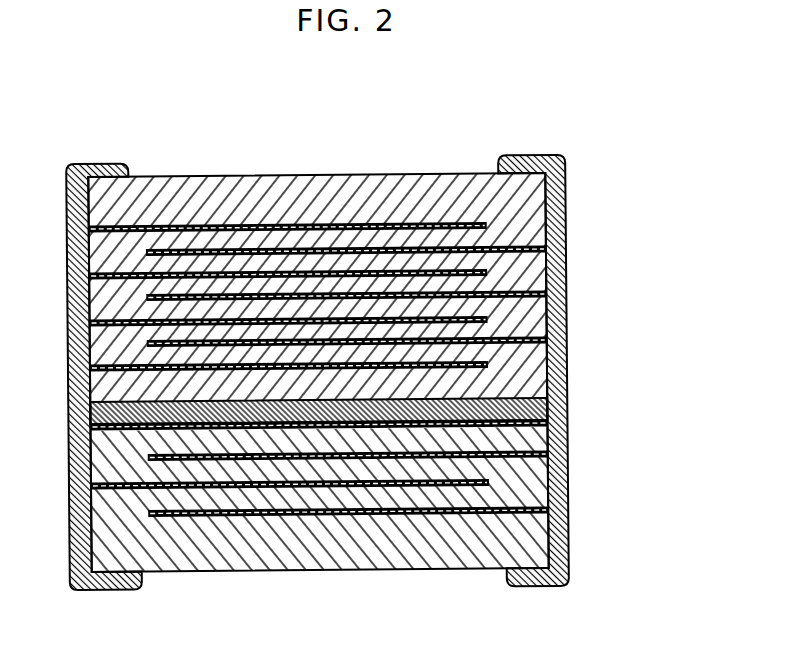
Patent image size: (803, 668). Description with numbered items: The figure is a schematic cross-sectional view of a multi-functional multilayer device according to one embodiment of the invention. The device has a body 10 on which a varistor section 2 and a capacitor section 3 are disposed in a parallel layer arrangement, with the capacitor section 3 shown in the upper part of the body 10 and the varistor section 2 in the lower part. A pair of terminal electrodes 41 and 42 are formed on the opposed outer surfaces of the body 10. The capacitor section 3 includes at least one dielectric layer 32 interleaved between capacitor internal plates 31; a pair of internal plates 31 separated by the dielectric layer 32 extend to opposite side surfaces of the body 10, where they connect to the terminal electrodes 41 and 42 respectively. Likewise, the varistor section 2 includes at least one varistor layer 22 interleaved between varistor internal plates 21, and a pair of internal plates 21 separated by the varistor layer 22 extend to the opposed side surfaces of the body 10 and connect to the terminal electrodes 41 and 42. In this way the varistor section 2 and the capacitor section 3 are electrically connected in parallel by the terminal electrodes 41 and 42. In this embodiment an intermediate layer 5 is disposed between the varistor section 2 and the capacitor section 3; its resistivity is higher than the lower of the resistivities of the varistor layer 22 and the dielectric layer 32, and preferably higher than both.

The body 10 is at (410, 172).
The varistor section 2 is at (419, 537).
The capacitor section 3 is at (415, 242).
The intermediate layer 5 is at (566, 413).
The varistor internal plates 21 is at (268, 514).
The varistor layer 22 is at (372, 502).
The capacitor internal plates 31 is at (250, 226).
The dielectric layer 32 is at (325, 238).
The terminal electrode 41 is at (125, 166).
The terminal electrode 42 is at (533, 156).